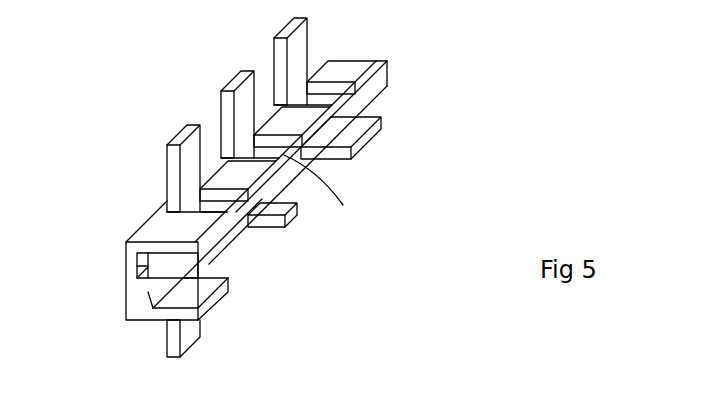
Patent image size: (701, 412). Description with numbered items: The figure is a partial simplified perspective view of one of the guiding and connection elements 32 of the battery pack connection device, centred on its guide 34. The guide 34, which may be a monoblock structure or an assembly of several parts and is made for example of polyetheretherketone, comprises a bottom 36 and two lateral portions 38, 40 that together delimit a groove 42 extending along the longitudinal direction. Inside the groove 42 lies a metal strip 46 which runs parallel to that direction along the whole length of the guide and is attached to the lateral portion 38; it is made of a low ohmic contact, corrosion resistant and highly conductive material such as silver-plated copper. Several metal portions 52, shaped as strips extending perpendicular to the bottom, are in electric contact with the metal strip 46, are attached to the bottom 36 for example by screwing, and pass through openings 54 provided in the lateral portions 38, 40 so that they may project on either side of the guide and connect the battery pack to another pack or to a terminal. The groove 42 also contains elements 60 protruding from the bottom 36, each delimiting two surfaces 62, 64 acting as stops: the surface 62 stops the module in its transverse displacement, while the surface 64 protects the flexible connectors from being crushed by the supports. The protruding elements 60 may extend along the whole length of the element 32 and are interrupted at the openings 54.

The guiding and connection element 32 is at (149, 70).
The guide 34 is at (146, 224).
The bottom 36 is at (127, 283).
The lateral portion 38 is at (188, 233).
The lateral portion 40 is at (205, 300).
The groove 42 is at (185, 291).
The metal strip 46 is at (326, 185).
The metal portion 52 is at (294, 60).
The opening 54 is at (340, 88).
The protruding element 60 is at (143, 286).
The surface 62 is at (148, 292).
The surface 64 is at (162, 310).